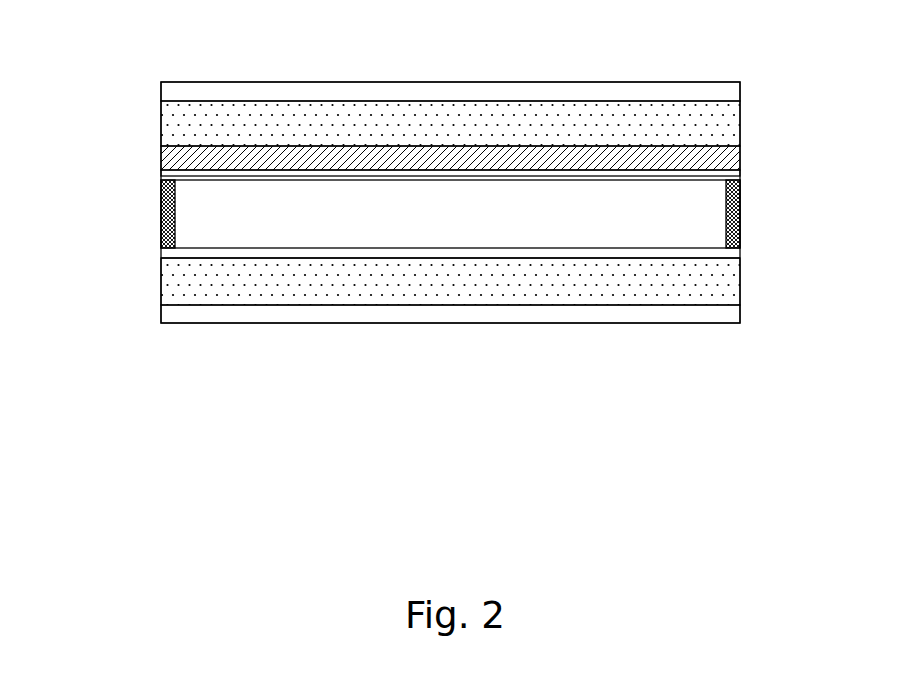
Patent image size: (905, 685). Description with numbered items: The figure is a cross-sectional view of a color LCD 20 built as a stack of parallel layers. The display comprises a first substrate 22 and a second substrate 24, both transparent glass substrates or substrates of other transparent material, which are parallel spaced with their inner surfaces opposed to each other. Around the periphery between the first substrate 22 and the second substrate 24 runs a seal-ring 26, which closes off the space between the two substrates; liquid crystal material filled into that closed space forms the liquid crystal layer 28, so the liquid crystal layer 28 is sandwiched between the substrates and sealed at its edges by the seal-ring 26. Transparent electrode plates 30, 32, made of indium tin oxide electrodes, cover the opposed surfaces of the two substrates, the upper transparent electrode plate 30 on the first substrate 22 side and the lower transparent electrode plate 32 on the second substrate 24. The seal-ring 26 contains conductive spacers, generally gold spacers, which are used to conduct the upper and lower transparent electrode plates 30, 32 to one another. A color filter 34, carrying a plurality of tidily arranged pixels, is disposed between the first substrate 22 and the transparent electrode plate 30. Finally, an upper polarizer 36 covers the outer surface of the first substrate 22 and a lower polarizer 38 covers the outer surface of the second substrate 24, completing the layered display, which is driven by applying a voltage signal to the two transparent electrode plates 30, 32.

The color LCD 20 is at (258, 352).
The first substrate 22 is at (720, 108).
The second substrate 24 is at (178, 284).
The seal-ring 26 is at (163, 222).
The liquid crystal layer 28 is at (710, 213).
The transparent electrode plate 30 is at (165, 176).
The transparent electrode plate 32 is at (727, 257).
The color filter 34 is at (740, 148).
The upper polarizer 36 is at (165, 88).
The lower polarizer 38 is at (668, 315).